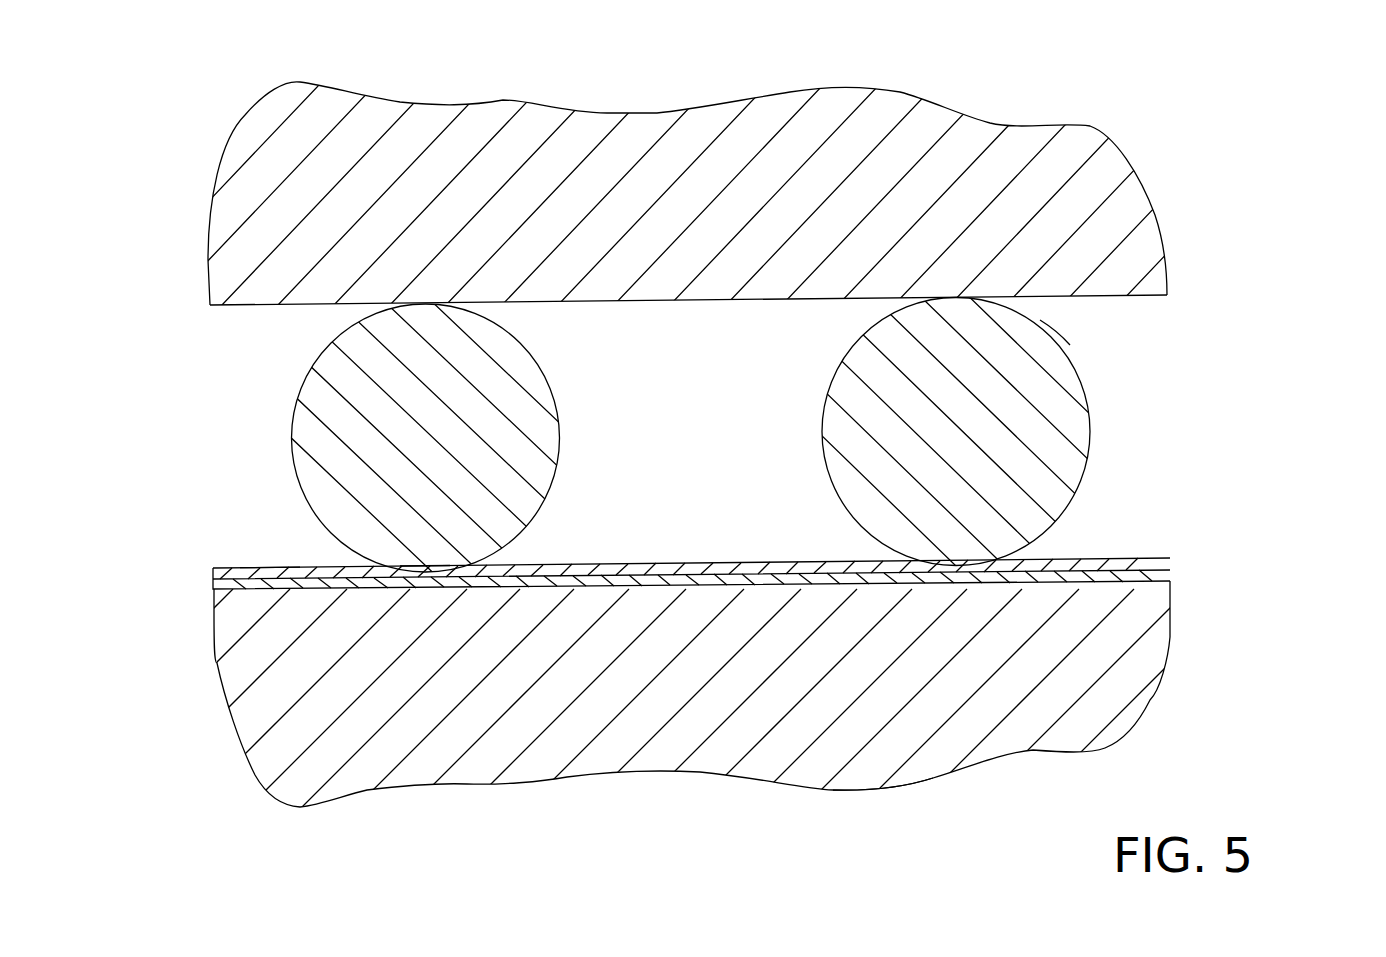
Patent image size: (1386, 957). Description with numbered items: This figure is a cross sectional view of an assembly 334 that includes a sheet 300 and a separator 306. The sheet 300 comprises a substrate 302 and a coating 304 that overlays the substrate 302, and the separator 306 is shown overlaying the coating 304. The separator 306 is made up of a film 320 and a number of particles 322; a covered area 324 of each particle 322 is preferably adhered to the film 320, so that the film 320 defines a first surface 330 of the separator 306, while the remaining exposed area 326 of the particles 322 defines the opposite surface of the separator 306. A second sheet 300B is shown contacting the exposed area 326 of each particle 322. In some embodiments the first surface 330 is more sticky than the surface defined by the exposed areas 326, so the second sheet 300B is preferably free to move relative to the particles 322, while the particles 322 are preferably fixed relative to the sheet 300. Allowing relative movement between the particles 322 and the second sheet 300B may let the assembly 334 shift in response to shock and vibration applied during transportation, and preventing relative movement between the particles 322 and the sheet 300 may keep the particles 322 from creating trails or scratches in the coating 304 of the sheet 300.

The second sheet 300B is at (748, 267).
The sheet 300 is at (690, 706).
The substrate 302 is at (1163, 657).
The coating 304 is at (746, 704).
The separator 306 is at (1152, 504).
The film 320 is at (278, 566).
The particle 322 is at (1192, 292).
The covered area 324 is at (422, 605).
The exposed area 326 is at (1070, 333).
The first surface 330 is at (1198, 554).
The assembly 334 is at (838, 840).